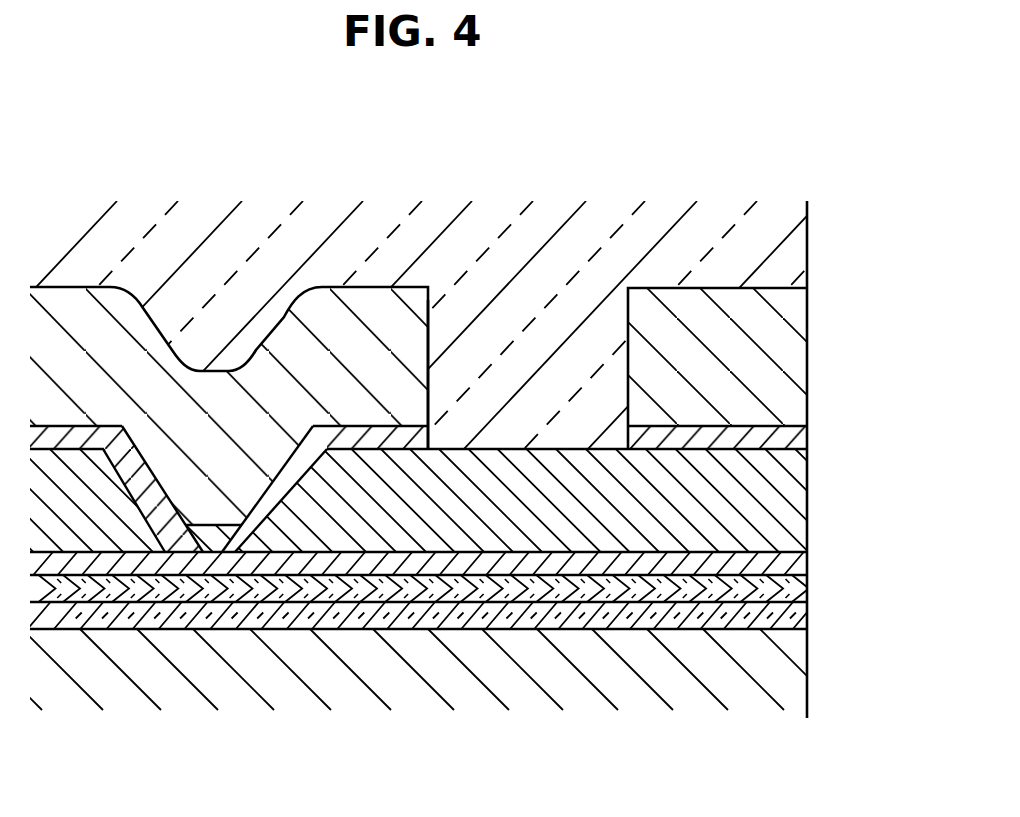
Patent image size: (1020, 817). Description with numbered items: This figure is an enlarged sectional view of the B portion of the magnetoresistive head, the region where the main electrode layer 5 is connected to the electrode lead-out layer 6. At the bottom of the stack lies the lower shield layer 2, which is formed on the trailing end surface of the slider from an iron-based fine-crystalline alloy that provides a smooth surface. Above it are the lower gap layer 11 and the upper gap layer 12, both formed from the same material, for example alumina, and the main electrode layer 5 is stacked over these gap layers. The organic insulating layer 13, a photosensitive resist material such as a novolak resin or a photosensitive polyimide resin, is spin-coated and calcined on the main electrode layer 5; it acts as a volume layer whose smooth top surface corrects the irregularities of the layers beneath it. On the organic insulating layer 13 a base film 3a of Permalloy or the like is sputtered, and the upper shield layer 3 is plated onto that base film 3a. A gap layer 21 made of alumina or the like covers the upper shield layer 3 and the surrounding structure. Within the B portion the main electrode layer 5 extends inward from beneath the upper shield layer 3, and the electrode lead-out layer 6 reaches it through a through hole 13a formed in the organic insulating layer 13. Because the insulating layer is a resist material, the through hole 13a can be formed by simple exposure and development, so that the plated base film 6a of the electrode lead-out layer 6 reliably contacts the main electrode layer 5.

The lower shield layer 2 is at (775, 680).
The lower gap layer 11 is at (792, 618).
The upper gap layer 12 is at (788, 588).
The main electrode layer 5 is at (787, 562).
The organic insulating layer 13 is at (775, 510).
The through hole 13a is at (296, 490).
The upper shield layer 3 is at (760, 363).
The base film 3a is at (790, 433).
The electrode lead-out layer 6 is at (362, 312).
The plated base film 6a is at (401, 440).
The gap layer 21 is at (775, 251).
The B portion B is at (645, 207).